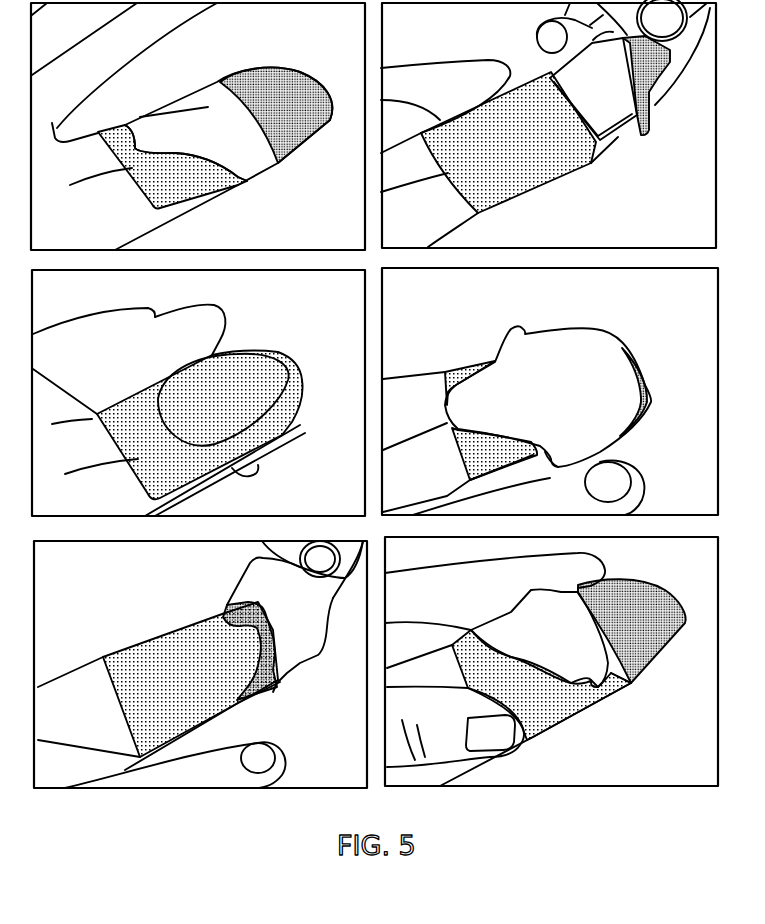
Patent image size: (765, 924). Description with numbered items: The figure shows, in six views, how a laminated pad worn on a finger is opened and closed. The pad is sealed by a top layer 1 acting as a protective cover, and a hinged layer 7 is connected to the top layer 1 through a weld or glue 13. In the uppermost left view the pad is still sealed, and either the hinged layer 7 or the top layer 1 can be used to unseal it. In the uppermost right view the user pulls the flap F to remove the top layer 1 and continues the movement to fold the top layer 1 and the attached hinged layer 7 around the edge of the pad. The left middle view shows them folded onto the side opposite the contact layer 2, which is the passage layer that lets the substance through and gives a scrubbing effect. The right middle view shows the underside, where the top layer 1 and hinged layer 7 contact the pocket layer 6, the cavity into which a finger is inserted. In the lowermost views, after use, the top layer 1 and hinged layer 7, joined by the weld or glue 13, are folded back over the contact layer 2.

The top layer 1 is at (252, 157).
The contact layer 2 is at (188, 193).
The pocket layer 6 is at (455, 362).
The hinged layer 7 is at (280, 83).
The weld or glue 13 is at (242, 597).
The flap or corner F is at (158, 125).